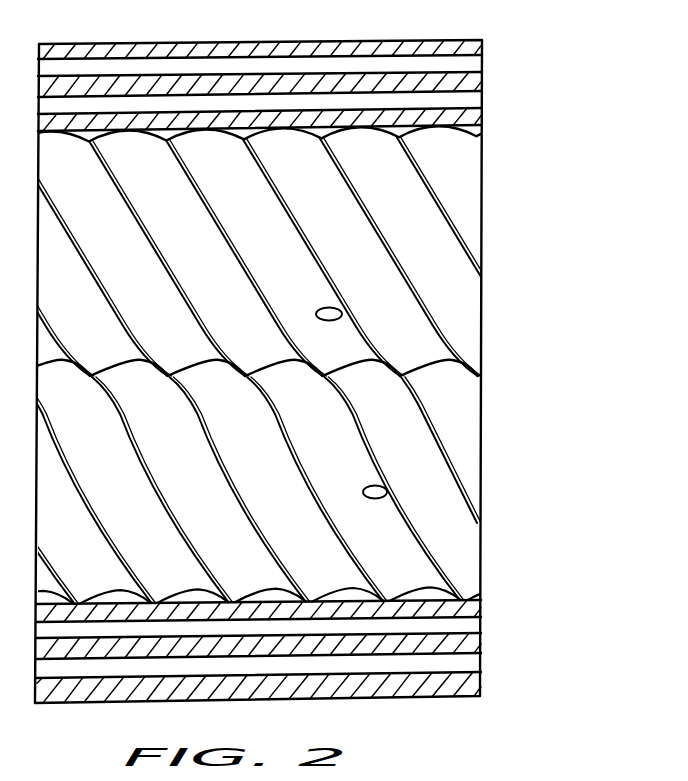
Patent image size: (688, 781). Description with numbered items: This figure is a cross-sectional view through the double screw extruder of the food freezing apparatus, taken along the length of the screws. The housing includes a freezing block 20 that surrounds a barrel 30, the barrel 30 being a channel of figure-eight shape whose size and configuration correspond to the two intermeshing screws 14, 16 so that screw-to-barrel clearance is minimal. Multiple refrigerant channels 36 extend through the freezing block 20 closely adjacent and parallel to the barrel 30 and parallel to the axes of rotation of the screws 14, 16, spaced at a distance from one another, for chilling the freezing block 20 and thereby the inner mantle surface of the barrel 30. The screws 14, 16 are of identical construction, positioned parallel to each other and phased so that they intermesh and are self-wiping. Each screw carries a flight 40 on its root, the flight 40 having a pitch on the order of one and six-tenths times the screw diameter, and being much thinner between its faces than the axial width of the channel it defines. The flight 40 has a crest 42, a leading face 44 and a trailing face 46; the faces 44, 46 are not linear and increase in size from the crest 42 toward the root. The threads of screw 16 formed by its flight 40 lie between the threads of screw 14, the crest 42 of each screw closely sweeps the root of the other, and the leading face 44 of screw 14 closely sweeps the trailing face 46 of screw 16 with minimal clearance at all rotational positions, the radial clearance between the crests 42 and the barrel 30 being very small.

The freezing block 20 is at (482, 39).
The refrigerant channels 36 is at (468, 100).
The barrel 30 is at (481, 133).
The screw 16 is at (293, 250).
The flight 40 is at (448, 220).
The leading face 44 is at (397, 268).
The trailing face 46 is at (341, 308).
The screw 14 is at (460, 537).
The crest 42 is at (413, 601).